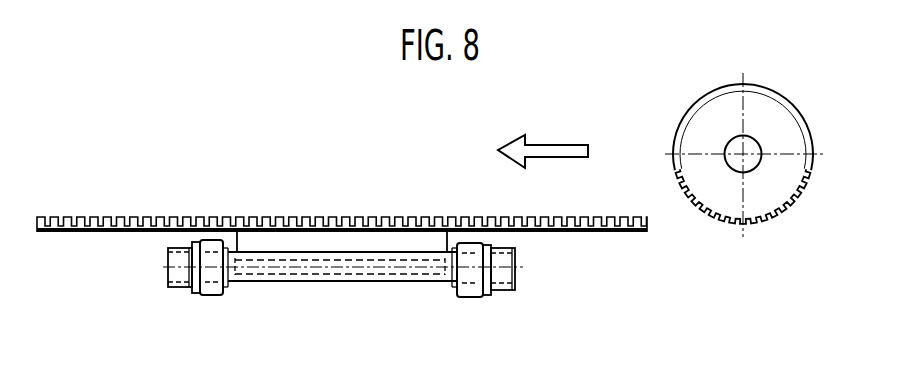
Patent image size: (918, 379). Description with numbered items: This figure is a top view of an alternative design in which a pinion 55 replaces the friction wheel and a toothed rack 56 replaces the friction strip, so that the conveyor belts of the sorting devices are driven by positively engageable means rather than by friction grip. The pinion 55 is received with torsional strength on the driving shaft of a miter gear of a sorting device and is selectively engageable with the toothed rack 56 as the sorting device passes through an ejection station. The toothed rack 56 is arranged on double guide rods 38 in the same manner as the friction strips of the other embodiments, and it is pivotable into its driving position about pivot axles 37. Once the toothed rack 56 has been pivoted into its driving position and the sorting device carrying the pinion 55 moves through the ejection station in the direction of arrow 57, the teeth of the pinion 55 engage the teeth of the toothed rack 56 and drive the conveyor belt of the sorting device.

The pinion 55 is at (767, 102).
The toothed rack 56 is at (95, 219).
The arrow 57 is at (545, 152).
The pivot axle 37 is at (400, 281).
The double guide rod 38 is at (268, 276).